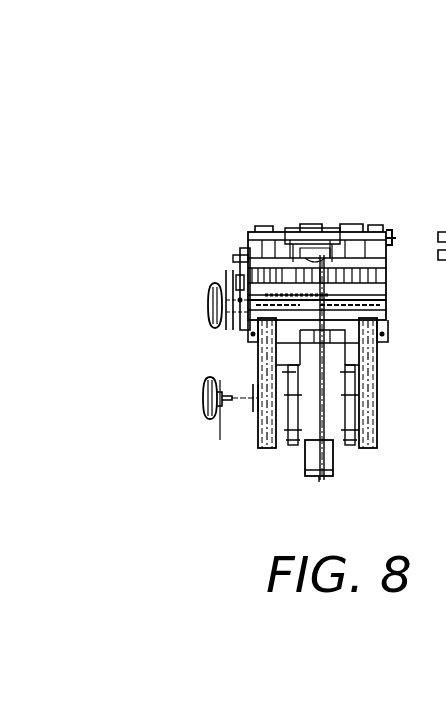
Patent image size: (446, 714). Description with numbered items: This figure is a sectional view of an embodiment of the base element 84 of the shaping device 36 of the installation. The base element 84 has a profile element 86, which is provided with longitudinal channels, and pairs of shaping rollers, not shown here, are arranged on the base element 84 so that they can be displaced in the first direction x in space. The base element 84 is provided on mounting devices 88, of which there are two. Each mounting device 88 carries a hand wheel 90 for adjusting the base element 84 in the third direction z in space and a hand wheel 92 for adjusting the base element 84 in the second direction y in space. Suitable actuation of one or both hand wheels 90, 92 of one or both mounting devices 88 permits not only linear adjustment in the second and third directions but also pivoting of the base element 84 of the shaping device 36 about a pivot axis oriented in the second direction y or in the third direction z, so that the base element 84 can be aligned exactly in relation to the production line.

The shaping device 36 is at (320, 138).
The base element 84 is at (357, 220).
The profile element 86 is at (300, 228).
The mounting device 88 is at (398, 332).
The hand wheel 90 is at (215, 420).
The hand wheel 92 is at (227, 292).